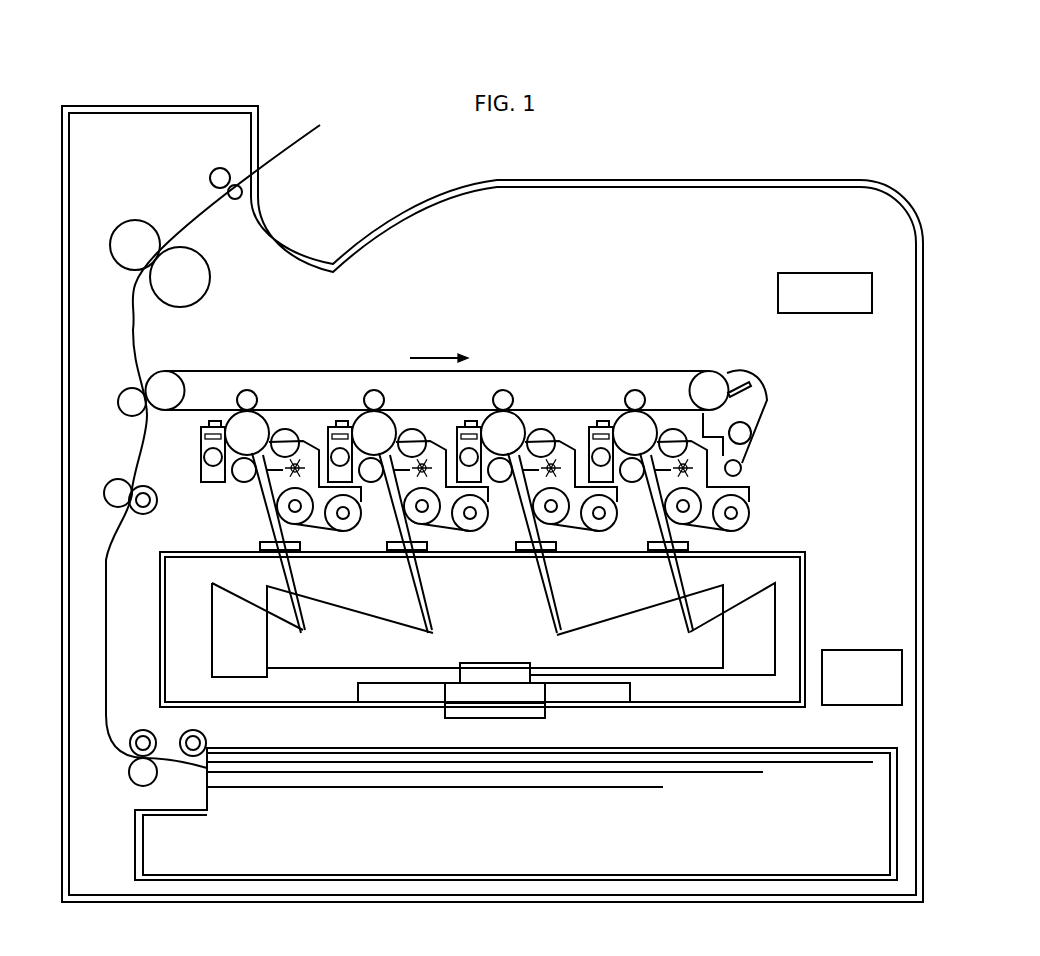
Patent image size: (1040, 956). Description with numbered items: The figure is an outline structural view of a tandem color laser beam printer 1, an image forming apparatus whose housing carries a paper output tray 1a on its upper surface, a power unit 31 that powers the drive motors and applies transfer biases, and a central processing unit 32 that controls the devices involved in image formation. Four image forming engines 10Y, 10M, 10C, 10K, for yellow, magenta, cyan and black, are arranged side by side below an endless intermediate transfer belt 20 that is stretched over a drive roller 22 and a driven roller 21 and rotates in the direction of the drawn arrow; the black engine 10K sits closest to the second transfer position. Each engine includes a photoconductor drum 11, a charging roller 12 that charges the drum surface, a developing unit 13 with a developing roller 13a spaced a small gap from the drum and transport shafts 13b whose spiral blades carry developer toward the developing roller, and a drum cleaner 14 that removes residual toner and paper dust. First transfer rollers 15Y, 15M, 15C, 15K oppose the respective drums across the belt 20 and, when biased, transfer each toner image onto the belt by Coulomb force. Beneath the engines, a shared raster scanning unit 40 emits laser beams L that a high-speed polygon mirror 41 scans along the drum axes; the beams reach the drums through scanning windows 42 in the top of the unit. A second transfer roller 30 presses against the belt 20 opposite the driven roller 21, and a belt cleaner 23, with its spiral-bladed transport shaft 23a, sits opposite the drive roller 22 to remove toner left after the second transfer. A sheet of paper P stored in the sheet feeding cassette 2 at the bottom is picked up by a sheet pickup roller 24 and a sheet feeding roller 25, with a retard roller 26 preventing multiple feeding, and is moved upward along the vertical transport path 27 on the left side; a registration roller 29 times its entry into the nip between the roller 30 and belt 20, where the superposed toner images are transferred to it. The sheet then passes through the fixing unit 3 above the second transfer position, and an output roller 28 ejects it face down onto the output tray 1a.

The color laser beam printer 1 is at (928, 352).
The paper output tray 1a is at (745, 180).
The sheet feeding cassette 2 is at (891, 827).
The fixing unit 3 is at (122, 232).
The image forming engine 10K is at (262, 488).
The image forming engine 10C is at (447, 530).
The image forming engine 10M is at (568, 530).
The image forming engine 10Y is at (745, 527).
The photoconductor drum 11 is at (259, 427).
The charging roller 12 is at (237, 481).
The developing unit 13 is at (268, 502).
The developing roller 13a is at (288, 438).
The transport shafts 13b is at (345, 525).
The drum cleaner 14 is at (205, 424).
The first transfer roller 15K is at (241, 389).
The first transfer roller 15C is at (371, 390).
The first transfer roller 15M is at (503, 391).
The first transfer roller 15Y is at (634, 391).
The intermediate transfer belt 20 is at (312, 370).
The driven roller 21 is at (164, 378).
The drive roller 22 is at (720, 375).
The belt cleaner 23 is at (768, 402).
The transport shaft 23a is at (742, 468).
The sheet pickup roller 24 is at (185, 733).
The sheet feeding roller 25 is at (131, 736).
The retard roller 26 is at (130, 772).
The transport path 27 is at (105, 597).
The output roller 28 is at (215, 170).
The registration roller 29 is at (106, 494).
The second transfer roller 30 is at (118, 404).
The power unit 31 is at (903, 678).
The central processing unit 32 is at (872, 293).
The raster scanning unit 40 is at (806, 583).
The polygon mirror 41 is at (509, 663).
The scanning windows 42 is at (296, 549).
The sheet of paper P is at (573, 740).
The laser beam L is at (214, 648).